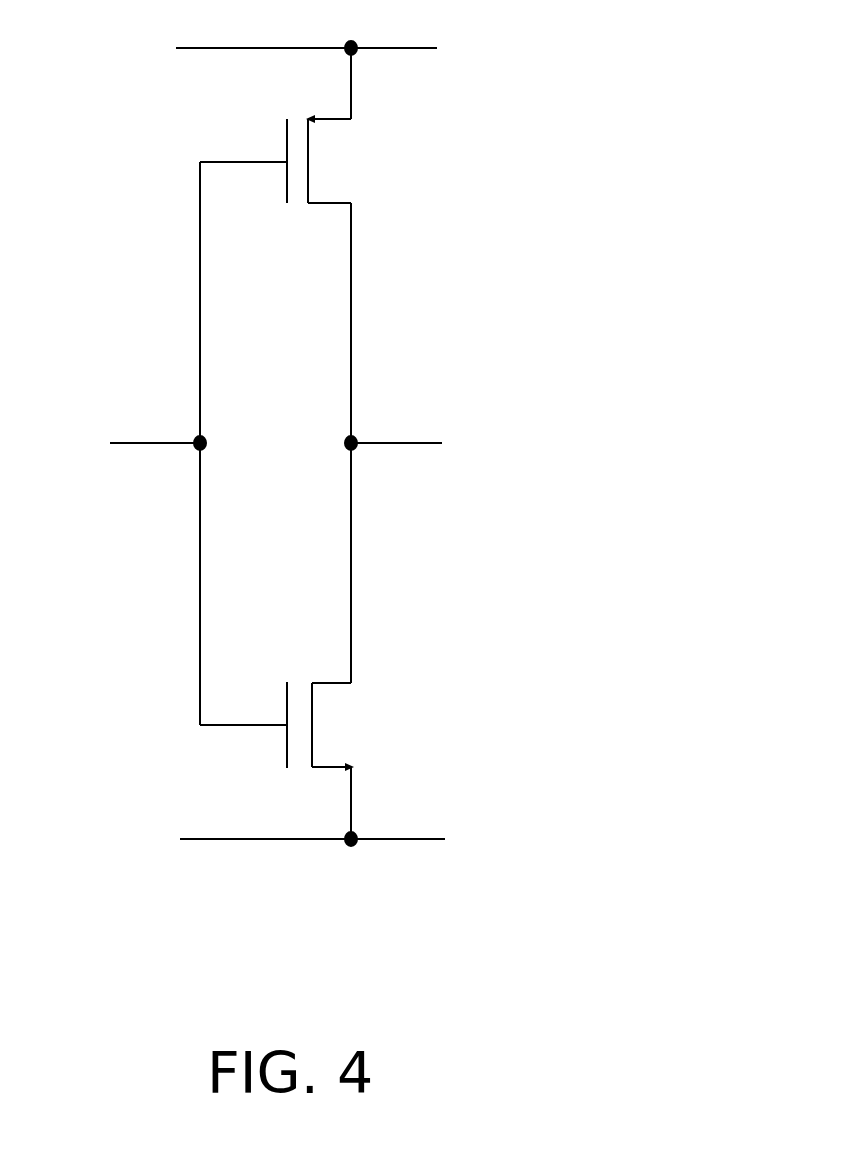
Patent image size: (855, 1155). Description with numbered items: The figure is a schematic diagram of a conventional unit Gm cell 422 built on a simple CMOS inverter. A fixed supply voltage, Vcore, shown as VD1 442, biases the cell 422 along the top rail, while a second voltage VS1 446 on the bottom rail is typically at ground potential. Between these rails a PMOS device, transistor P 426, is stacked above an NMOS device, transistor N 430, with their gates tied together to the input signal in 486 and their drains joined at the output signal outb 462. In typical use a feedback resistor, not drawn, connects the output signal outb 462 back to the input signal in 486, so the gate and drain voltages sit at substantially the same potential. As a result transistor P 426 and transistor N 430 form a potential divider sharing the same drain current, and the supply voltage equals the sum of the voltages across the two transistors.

The unit Gm cell 422 is at (355, 534).
The transistor P 426 is at (313, 157).
The transistor N 430 is at (317, 720).
The VD1 442 is at (407, 57).
The supply voltage node VS1 446 is at (412, 842).
The output signal outb 462 is at (398, 450).
The input signal in 486 is at (160, 445).